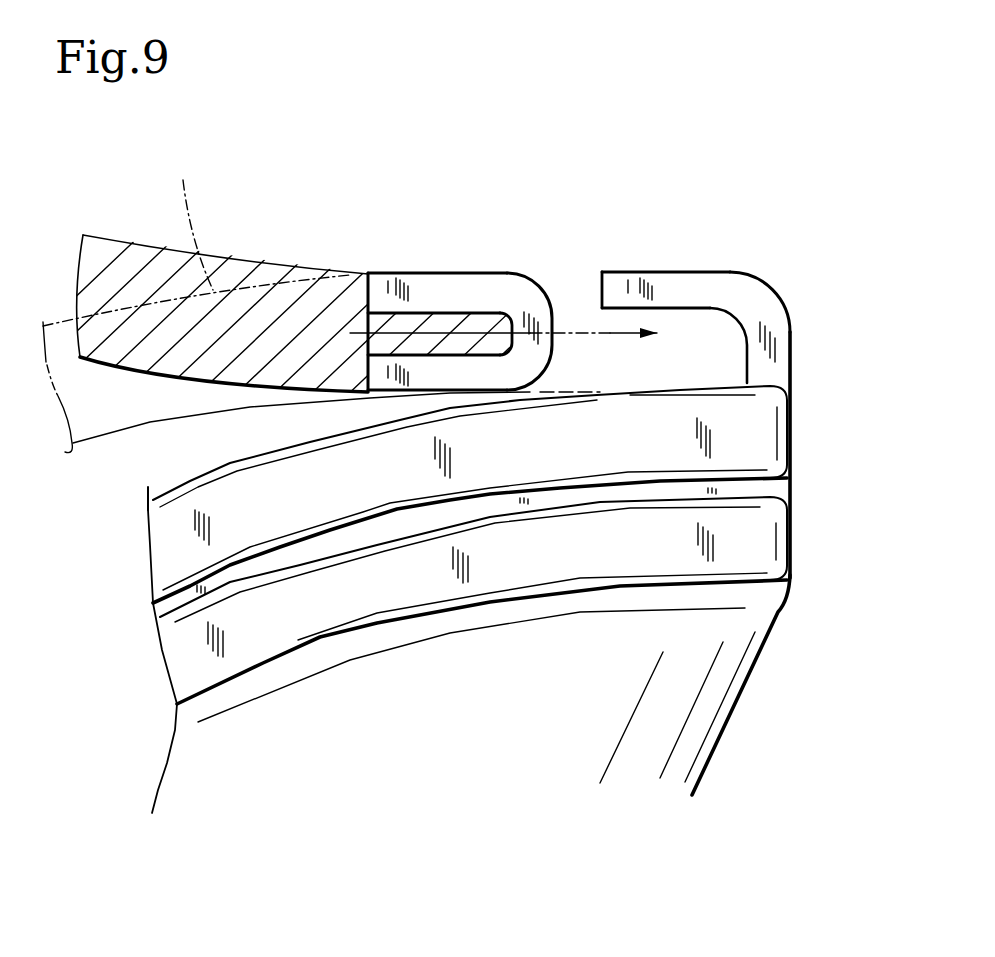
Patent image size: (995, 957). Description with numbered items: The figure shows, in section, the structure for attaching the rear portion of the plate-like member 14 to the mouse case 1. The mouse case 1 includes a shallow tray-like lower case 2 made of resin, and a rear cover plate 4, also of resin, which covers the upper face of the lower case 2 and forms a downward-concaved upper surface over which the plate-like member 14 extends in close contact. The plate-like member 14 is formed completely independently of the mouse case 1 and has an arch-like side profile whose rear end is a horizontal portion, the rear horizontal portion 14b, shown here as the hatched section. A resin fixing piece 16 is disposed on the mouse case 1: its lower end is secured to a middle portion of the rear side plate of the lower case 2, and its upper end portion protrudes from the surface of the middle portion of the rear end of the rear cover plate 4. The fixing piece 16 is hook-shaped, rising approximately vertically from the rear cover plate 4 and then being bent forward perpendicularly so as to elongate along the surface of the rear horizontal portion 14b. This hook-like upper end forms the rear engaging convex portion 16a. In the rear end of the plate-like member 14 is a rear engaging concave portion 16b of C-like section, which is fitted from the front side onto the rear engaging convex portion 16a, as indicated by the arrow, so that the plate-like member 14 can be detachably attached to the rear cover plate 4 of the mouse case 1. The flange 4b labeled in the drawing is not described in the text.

The mouse case 1 is at (760, 672).
The lower case 2 is at (175, 645).
The rear cover plate 4 is at (163, 545).
The rim flange 4b is at (767, 437).
The plate-like member 14 is at (143, 252).
The rear horizontal portion 14b is at (419, 273).
The fixing piece 16 is at (767, 258).
The rear engaging convex portion 16a is at (670, 270).
The rear engaging concave portion 16b is at (510, 287).